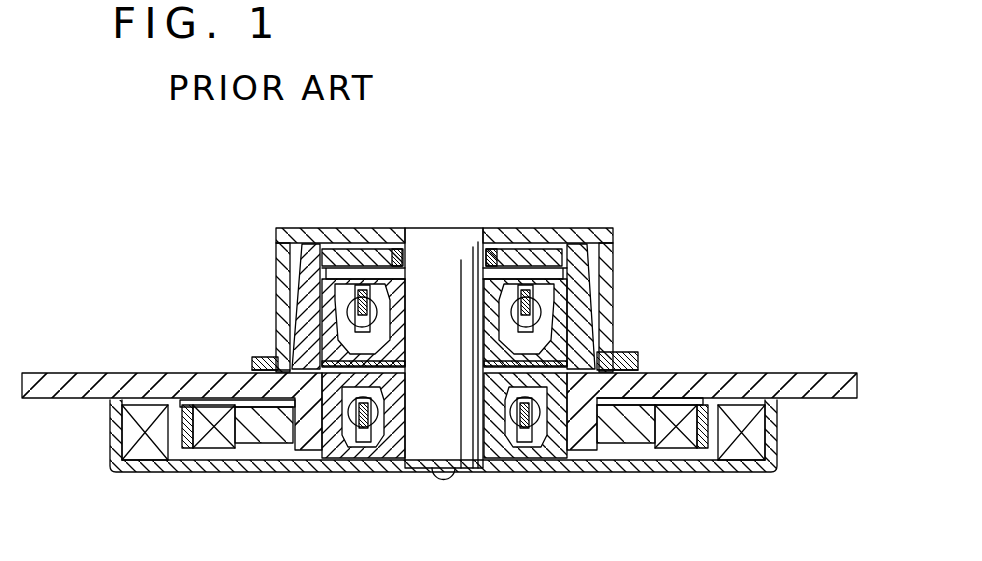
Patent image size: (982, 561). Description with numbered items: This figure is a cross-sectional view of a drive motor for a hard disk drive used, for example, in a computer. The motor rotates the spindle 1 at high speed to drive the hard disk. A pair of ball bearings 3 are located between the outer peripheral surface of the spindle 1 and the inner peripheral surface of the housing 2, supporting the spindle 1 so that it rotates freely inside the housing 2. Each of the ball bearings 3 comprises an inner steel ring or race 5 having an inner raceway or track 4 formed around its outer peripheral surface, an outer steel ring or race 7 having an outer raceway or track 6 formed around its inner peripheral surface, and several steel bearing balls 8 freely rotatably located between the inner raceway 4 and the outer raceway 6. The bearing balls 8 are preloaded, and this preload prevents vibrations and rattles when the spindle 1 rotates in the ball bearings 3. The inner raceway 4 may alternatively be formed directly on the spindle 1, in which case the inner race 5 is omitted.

The spindle 1 is at (455, 243).
The housing 2 is at (613, 287).
The ball bearings 3 is at (575, 292).
The inner raceway 4 is at (356, 296).
The inner race 5 is at (410, 290).
The outer raceway 6 is at (347, 318).
The outer race 7 is at (335, 320).
The bearing balls 8 is at (343, 327).